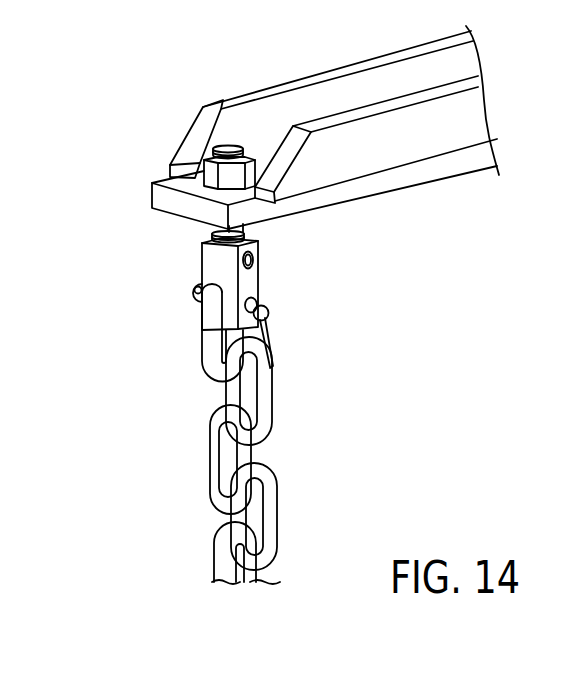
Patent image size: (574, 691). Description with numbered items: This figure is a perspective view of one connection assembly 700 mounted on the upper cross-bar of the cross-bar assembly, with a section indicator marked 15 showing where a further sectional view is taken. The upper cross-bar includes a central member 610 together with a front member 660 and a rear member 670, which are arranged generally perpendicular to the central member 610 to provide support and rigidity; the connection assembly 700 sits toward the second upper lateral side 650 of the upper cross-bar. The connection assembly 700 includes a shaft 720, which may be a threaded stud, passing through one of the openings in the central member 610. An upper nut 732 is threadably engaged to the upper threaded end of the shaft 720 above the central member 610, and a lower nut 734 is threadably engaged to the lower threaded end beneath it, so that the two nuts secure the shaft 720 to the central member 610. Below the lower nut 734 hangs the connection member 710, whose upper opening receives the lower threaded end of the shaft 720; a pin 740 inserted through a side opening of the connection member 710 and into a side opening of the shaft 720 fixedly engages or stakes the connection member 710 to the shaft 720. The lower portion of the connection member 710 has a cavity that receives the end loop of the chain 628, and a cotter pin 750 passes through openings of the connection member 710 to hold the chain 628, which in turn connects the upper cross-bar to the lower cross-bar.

The section line of FIG. 15 is at (231, 138).
The central member 610 is at (158, 196).
The chain 628 is at (212, 352).
The second upper lateral side 650 is at (380, 88).
The front member 660 is at (418, 143).
The rear member 670 is at (418, 78).
The connection assembly 700 is at (104, 310).
The connection member 710 is at (203, 256).
The shaft 720 is at (222, 149).
The upper nut 732 is at (212, 176).
The lower nut 734 is at (204, 234).
The pin 740 is at (253, 263).
The cotter pin 750 is at (267, 317).